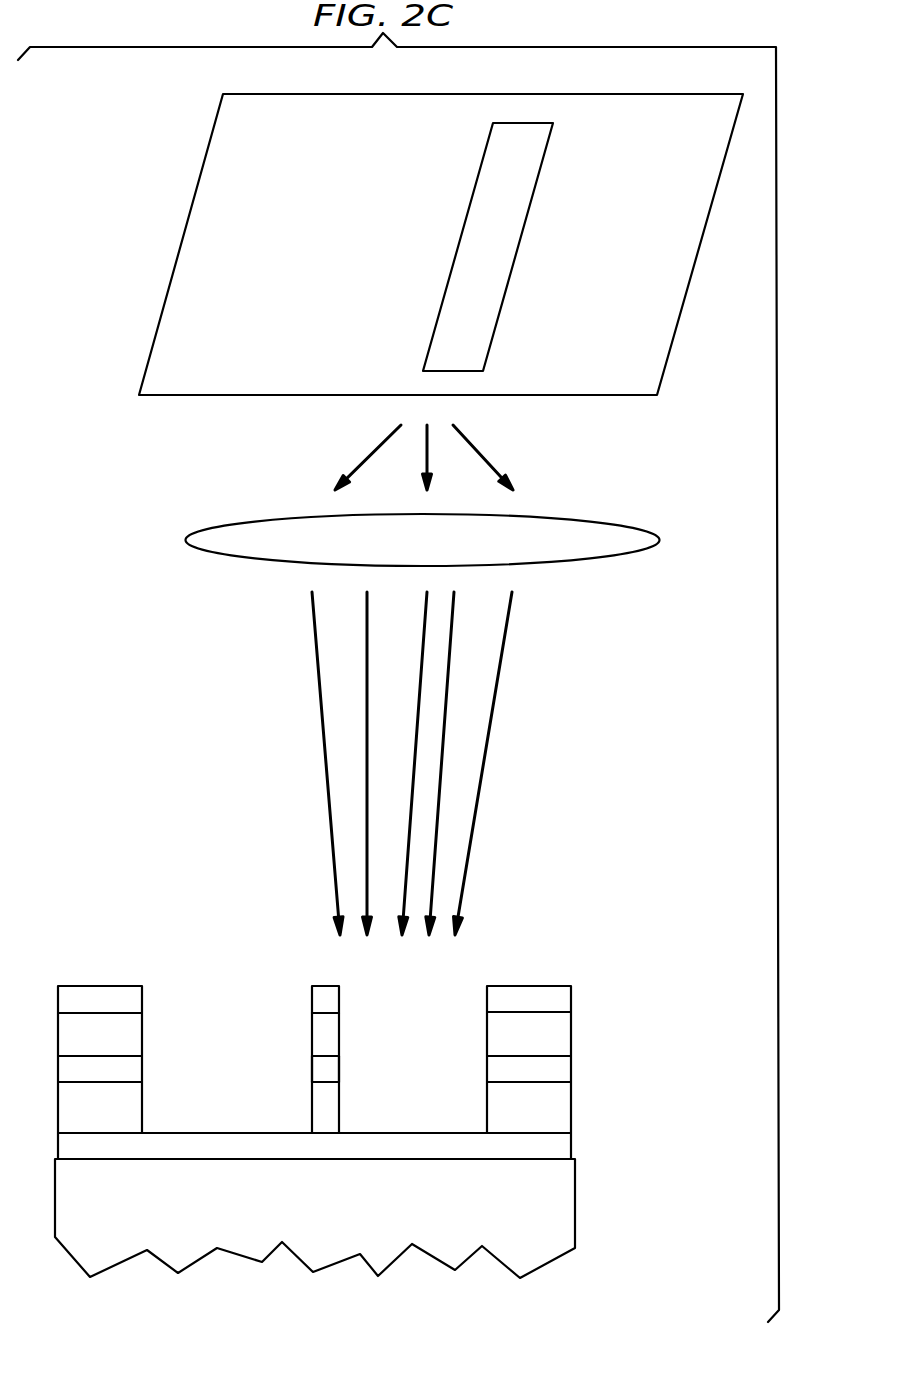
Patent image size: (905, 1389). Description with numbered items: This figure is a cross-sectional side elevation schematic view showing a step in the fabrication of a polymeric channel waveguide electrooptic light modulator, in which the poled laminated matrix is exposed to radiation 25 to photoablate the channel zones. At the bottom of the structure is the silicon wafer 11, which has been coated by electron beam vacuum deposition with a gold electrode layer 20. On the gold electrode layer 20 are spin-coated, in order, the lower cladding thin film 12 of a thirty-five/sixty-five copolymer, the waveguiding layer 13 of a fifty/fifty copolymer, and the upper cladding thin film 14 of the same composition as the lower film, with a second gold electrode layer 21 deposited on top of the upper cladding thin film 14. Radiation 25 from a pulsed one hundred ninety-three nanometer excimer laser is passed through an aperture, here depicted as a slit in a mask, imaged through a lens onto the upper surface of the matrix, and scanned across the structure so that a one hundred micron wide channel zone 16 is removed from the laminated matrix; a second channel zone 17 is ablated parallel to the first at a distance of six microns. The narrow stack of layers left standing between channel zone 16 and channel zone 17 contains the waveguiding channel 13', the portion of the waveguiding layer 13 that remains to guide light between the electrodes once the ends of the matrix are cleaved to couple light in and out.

The silicon wafer 11 is at (527, 1248).
The cladding thin film 12 is at (557, 1108).
The waveguiding layer 13 is at (577, 1053).
The waveguiding channel 13' is at (380, 1056).
The cladding thin film 14 is at (562, 1034).
The channel zone 16 is at (462, 982).
The second channel zone 17 is at (232, 973).
The gold electrode layer 20 is at (553, 1143).
The gold electrode layer 21 is at (548, 997).
The radiation 25 is at (548, 443).